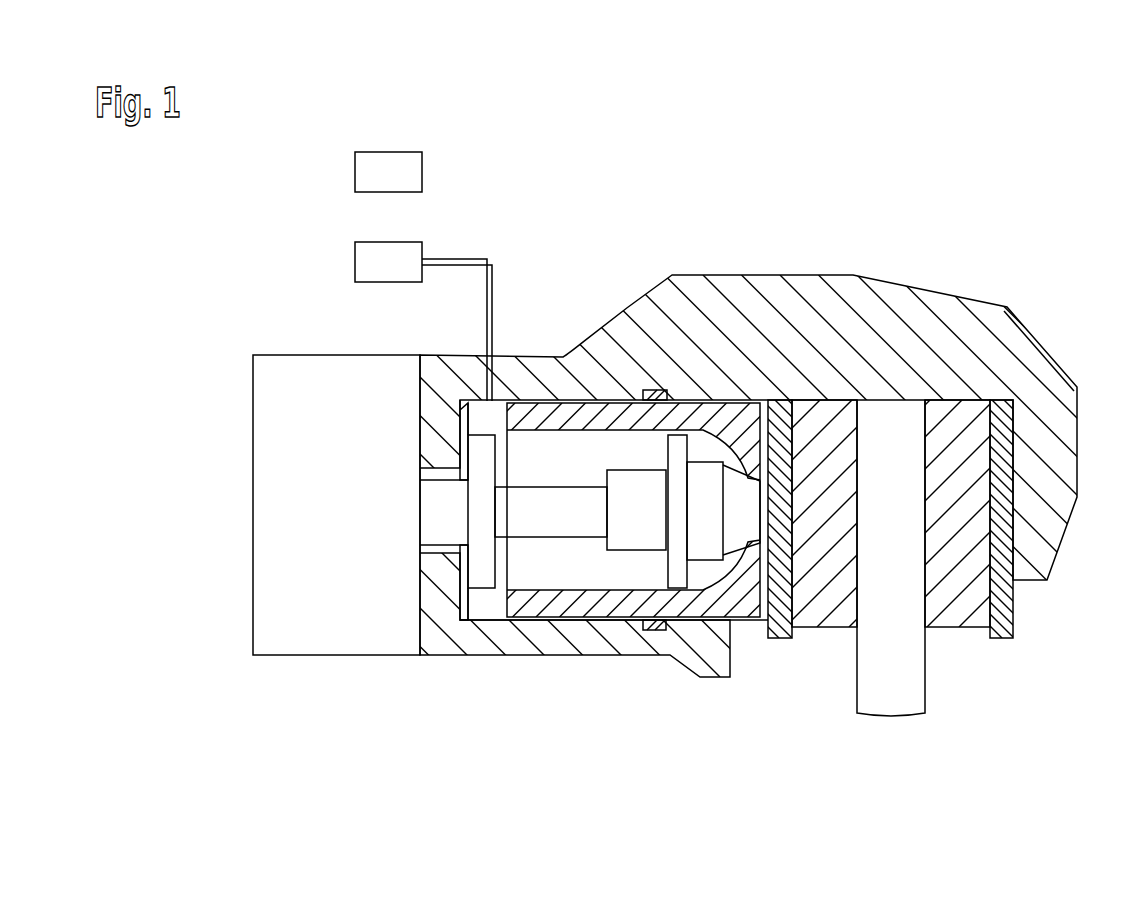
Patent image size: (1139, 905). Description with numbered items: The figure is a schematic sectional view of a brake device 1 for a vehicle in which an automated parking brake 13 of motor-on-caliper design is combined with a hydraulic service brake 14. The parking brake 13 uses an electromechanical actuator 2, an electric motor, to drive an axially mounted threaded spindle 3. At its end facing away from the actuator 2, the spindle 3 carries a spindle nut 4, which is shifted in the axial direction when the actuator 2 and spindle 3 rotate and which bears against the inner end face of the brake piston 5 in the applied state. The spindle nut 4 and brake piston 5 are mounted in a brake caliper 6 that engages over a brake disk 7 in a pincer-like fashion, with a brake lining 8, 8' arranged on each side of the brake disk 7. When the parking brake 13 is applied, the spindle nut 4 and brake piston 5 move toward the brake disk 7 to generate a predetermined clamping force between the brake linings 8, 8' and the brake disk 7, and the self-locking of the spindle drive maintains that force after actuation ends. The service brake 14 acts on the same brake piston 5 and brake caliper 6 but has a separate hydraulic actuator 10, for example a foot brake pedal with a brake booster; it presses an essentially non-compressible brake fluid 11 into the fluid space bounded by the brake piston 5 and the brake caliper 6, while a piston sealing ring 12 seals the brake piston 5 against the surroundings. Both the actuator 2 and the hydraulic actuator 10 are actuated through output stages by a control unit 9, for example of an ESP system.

The brake device 1 is at (987, 248).
The electromechanical actuator 2 is at (338, 380).
The spindle 3 is at (549, 513).
The spindle nut 4 is at (640, 525).
The brake piston 5 is at (597, 607).
The brake caliper 6 is at (768, 290).
The brake disk 7 is at (890, 690).
The brake lining 8 is at (818, 582).
The brake lining 8' is at (921, 582).
The control unit 9 is at (442, 164).
The hydraulic actuator 10 is at (417, 246).
The brake fluid 11 is at (481, 603).
The piston sealing ring 12 is at (658, 631).
The automated parking brake 13 is at (310, 680).
The service brake 14 is at (533, 192).